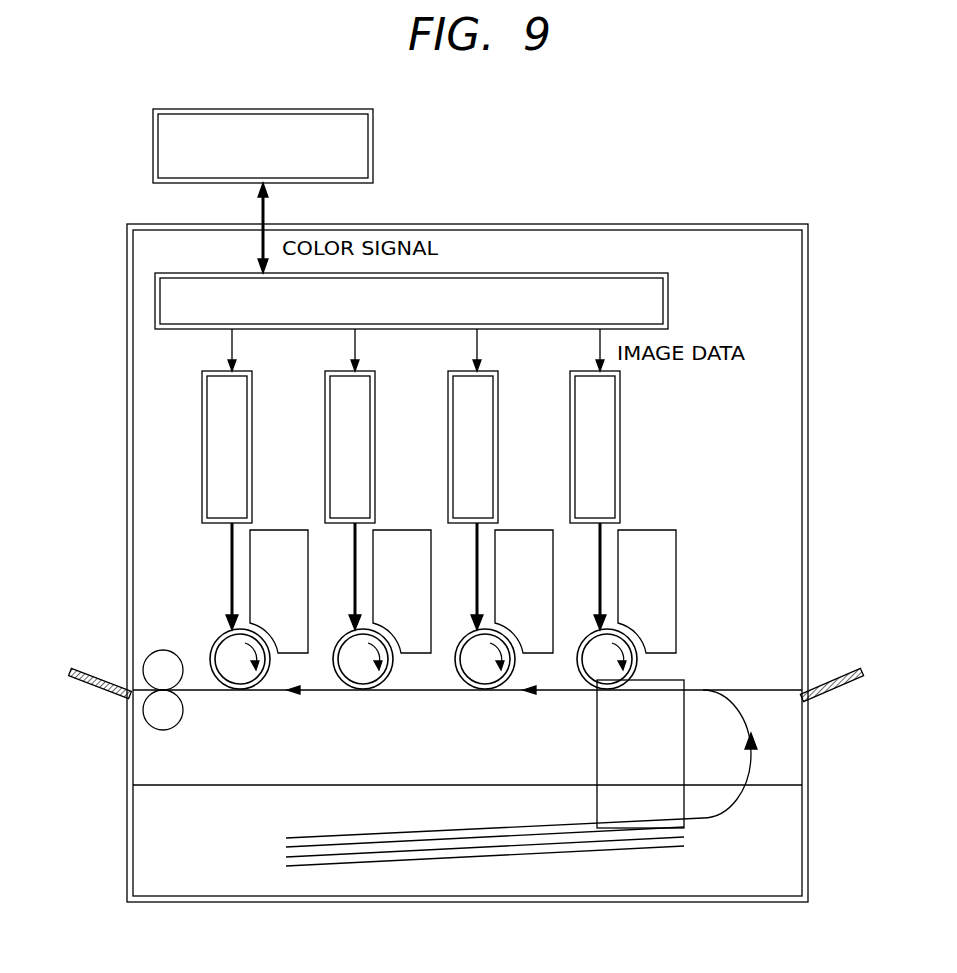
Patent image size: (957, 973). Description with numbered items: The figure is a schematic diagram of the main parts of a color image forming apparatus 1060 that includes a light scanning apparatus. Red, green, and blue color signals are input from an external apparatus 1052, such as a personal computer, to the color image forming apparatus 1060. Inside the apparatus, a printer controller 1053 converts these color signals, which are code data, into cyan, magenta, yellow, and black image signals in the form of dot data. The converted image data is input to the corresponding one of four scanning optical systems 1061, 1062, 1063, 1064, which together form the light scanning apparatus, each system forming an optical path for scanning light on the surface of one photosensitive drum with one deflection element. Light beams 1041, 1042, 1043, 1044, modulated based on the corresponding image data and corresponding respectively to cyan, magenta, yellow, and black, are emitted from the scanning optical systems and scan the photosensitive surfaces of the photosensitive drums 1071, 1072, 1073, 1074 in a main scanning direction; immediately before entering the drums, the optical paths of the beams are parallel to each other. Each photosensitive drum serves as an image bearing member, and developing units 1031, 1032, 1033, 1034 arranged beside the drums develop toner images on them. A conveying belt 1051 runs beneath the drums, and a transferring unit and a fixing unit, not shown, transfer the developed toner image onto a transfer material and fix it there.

The external apparatus 1052 is at (373, 146).
The color image forming apparatus 1060 is at (710, 212).
The printer controller 1053 is at (668, 295).
The scanning optical system 1061 is at (252, 410).
The scanning optical system 1062 is at (375, 410).
The scanning optical system 1063 is at (498, 410).
The scanning optical system 1064 is at (620, 409).
The developing unit 1031 is at (278, 538).
The developing unit 1032 is at (404, 538).
The developing unit 1033 is at (529, 538).
The developing unit 1034 is at (654, 538).
The light beam 1041 is at (231, 580).
The light beam 1042 is at (352, 578).
The light beam 1043 is at (474, 580).
The light beam 1044 is at (597, 580).
The photosensitive drum 1071 is at (240, 672).
The photosensitive drum 1072 is at (366, 672).
The photosensitive drum 1073 is at (488, 672).
The photosensitive drum 1074 is at (612, 675).
The conveying belt 1051 is at (740, 692).